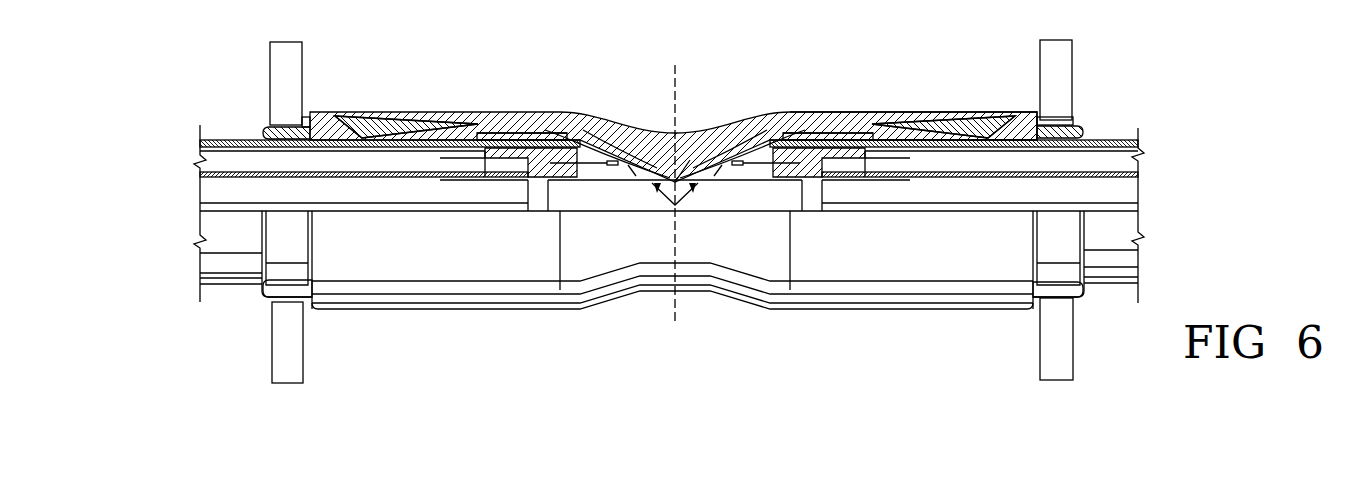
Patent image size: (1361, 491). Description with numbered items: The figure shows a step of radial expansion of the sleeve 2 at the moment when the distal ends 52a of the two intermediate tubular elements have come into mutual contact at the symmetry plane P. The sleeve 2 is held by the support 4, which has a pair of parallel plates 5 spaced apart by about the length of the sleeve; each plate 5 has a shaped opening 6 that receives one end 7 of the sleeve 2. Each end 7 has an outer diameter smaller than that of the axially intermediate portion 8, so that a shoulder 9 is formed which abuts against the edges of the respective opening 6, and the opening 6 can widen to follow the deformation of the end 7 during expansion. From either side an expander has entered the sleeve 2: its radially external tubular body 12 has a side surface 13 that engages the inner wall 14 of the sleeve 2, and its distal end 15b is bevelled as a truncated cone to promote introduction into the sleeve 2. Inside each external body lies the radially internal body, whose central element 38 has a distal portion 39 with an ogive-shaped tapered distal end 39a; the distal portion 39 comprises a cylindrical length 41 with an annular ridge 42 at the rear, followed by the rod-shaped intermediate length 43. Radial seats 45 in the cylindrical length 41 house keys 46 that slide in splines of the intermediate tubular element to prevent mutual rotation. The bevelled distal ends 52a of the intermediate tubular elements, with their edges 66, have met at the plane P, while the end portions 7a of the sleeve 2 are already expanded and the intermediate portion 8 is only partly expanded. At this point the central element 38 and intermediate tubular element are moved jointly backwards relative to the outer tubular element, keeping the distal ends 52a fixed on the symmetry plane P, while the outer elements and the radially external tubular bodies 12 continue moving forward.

The sleeve 2 is at (760, 100).
The support 4 is at (252, 42).
The plate 5 is at (299, 88).
The shaped opening 6 is at (263, 131).
The end of the sleeve 7 is at (263, 137).
The end portion of the sleeve 7a is at (432, 106).
The axially intermediate portion 8 is at (661, 283).
The shoulder 9 is at (303, 118).
The radially external tubular body 12 is at (502, 128).
The side surface 13 is at (476, 120).
The inner wall 14 is at (704, 166).
The distal end 15b is at (568, 134).
The central element 38 is at (356, 220).
The distal portion 39 is at (610, 166).
The tapered distal end 39a is at (686, 178).
The cylindrical length 41 is at (563, 203).
The annular ridge 42 is at (576, 176).
The intermediate length 43 is at (237, 203).
The radial seat 45 is at (613, 218).
The key 46 is at (602, 183).
The distal end 52a is at (634, 178).
The edge 66 is at (630, 168).
The symmetry plane P is at (678, 78).